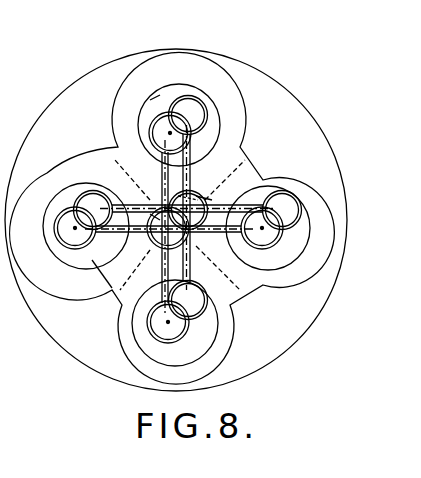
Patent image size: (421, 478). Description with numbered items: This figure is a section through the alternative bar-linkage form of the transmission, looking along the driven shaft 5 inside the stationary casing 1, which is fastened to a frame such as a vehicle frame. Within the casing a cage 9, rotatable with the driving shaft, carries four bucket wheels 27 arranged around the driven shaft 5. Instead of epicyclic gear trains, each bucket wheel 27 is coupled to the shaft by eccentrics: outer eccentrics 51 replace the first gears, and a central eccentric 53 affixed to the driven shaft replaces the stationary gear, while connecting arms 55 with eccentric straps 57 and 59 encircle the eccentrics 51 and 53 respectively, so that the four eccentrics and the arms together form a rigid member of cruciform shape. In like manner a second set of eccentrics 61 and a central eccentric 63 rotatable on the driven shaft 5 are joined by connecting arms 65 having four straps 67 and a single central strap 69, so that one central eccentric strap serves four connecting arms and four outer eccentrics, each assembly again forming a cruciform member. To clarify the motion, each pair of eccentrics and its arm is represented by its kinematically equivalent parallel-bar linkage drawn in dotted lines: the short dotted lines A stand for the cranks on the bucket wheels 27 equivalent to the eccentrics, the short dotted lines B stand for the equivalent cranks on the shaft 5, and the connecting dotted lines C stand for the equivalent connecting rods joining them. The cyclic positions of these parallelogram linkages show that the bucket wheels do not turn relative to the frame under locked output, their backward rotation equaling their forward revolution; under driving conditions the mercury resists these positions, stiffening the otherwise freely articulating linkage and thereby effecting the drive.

The stationary casing 1 is at (150, 52).
The driven shaft 5 is at (150, 200).
The cage 9 is at (103, 287).
The bucket wheel 27 is at (253, 157).
The eccentrics 51 is at (210, 105).
The eccentric 53 is at (196, 180).
The connecting arms 55 is at (196, 160).
The eccentric straps 57 is at (195, 92).
The eccentric strap 59 is at (212, 197).
The eccentrics 61 is at (150, 130).
The eccentric 63 is at (161, 262).
The connecting arms 65 is at (165, 170).
The straps 67 is at (158, 102).
The strap 69 is at (142, 243).
The short dotted lines representing cranks on the bucket wheels A is at (186, 112).
The short dotted lines representing equivalent cranks on the shaft B is at (218, 268).
The connecting dotted lines representing equivalent connecting rods C is at (142, 290).